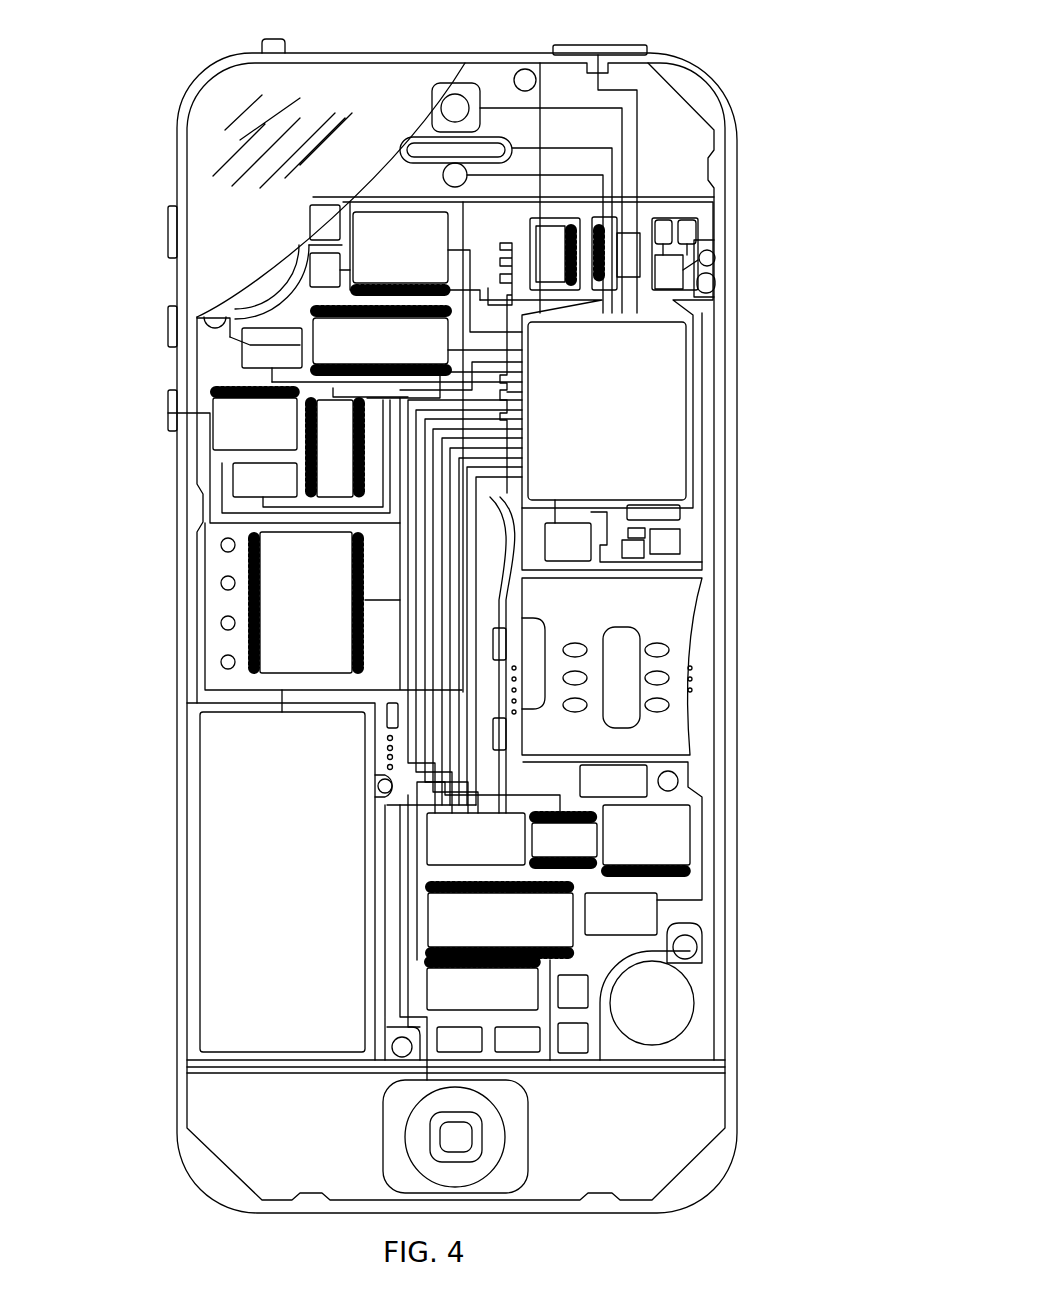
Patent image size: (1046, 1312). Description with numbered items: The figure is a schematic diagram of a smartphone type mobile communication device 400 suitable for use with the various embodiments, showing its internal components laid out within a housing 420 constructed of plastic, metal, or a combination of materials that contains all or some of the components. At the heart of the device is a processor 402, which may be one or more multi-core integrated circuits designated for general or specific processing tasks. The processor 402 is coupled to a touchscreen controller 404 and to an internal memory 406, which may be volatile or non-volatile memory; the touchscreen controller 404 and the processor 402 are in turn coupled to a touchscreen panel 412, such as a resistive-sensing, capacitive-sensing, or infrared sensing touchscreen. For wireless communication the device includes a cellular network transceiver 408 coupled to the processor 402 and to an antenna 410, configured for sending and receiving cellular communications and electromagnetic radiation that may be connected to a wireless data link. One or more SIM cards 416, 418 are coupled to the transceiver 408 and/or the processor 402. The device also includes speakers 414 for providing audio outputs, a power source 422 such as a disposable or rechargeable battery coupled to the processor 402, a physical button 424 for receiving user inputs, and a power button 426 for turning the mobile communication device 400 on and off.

The mobile communication device 400 is at (431, 613).
The processor 402 is at (628, 417).
The touchscreen controller 404 is at (425, 259).
The internal memory 406 is at (403, 346).
The cellular network transceiver 408 is at (327, 613).
The antenna 410 is at (693, 277).
The touchscreen panel 412 is at (213, 175).
The speakers 414 is at (400, 133).
The SIM card 416 is at (518, 928).
The SIM card 418 is at (502, 998).
The housing 420 is at (732, 1122).
The power source 422 is at (303, 893).
The physical button 424 is at (521, 1166).
The power button 426 is at (628, 44).